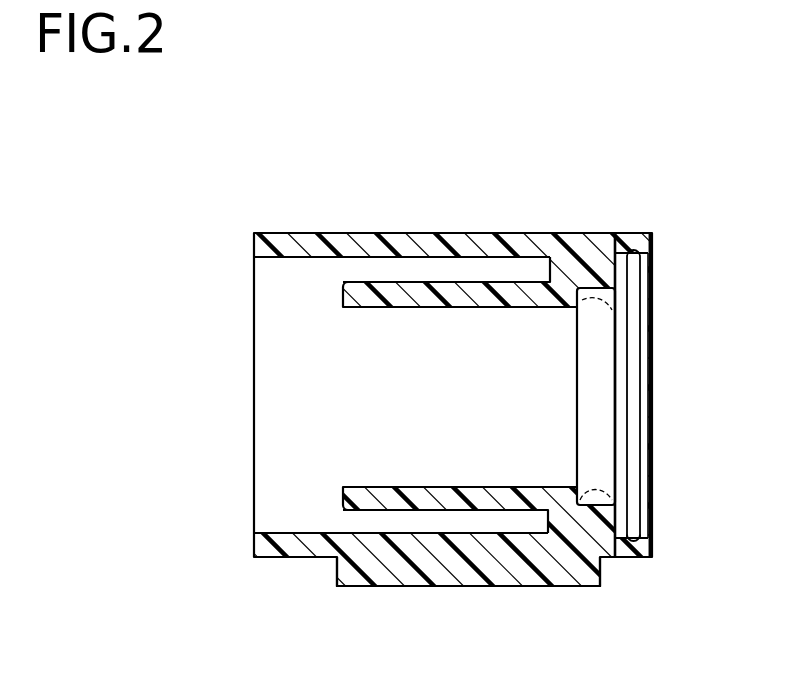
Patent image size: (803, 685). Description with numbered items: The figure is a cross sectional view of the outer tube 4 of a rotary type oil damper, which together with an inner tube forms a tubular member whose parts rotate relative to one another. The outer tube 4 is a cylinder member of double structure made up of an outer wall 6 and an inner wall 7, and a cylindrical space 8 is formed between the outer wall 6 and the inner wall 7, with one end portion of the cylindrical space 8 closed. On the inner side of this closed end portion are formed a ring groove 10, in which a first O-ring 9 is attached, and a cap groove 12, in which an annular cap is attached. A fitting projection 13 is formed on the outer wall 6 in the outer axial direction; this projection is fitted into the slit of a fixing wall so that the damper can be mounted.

The outer tube 4 is at (276, 208).
The outer wall 6 is at (380, 237).
The inner wall 7 is at (425, 298).
The cylindrical space 8 is at (457, 268).
The first O-ring 9 is at (592, 305).
The ring groove 10 is at (598, 262).
The cap groove 12 is at (627, 510).
The fitting projection 13 is at (425, 584).